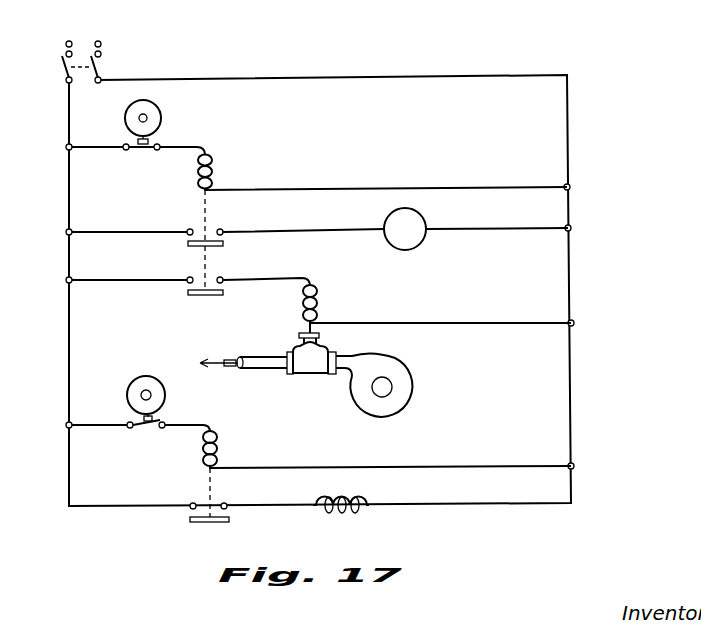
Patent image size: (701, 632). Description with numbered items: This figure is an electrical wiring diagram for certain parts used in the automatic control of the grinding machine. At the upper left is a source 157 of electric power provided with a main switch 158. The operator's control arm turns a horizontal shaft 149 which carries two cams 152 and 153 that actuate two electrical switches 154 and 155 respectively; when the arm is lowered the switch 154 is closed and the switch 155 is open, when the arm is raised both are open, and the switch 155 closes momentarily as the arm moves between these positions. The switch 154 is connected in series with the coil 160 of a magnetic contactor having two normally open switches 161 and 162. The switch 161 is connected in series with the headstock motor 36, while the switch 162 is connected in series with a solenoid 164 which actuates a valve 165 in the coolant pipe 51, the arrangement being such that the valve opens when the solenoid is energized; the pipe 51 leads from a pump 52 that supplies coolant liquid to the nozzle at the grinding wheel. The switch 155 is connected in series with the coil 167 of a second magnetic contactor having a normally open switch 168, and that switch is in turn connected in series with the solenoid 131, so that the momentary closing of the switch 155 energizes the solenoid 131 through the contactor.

The source of electric power 157 is at (82, 50).
The main switch 158 is at (80, 69).
The horizontal shaft 149 is at (147, 114).
The cam 152 is at (158, 115).
The electrical switch 154 is at (146, 150).
The coil of magnetic contactor 160 is at (213, 163).
The normally open switch 161 is at (192, 247).
The normally open switch 162 is at (193, 296).
The headstock motor 36 is at (408, 250).
The solenoid 164 is at (318, 297).
The coolant pipe 51 is at (263, 370).
The valve 165 is at (312, 373).
The pump 52 is at (400, 377).
The cam 153 is at (129, 385).
The electrical switch 155 is at (152, 432).
The coil of magnetic contactor 167 is at (218, 447).
The normally open switch 168 is at (203, 527).
The solenoid 131 is at (360, 508).